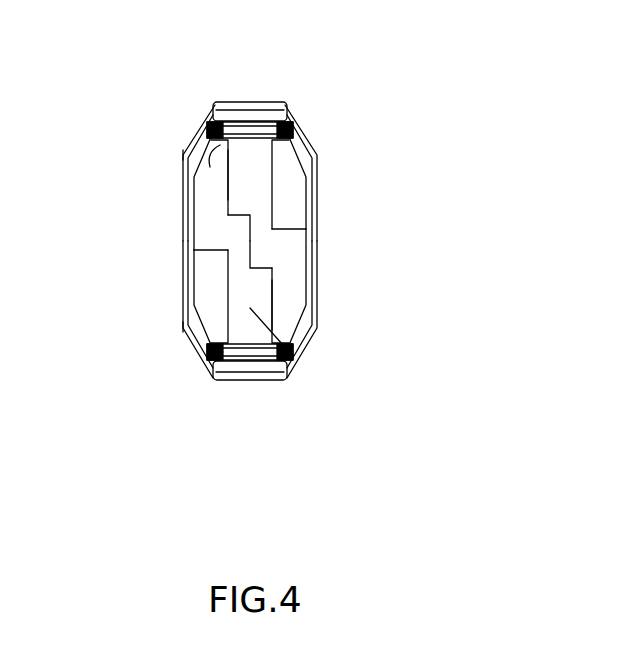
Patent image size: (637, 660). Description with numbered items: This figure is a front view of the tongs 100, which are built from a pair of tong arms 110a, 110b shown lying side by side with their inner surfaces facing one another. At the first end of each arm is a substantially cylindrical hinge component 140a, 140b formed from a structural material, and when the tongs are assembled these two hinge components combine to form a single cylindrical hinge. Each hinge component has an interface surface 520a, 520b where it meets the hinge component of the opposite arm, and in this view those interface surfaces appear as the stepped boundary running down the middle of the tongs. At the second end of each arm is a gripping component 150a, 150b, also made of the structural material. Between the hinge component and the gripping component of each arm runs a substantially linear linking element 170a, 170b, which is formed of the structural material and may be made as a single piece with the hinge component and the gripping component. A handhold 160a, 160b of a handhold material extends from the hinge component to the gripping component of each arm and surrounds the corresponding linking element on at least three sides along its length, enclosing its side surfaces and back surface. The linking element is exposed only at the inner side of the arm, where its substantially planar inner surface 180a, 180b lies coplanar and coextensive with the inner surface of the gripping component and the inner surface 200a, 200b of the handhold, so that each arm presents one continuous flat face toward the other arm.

The tongs 100 is at (353, 182).
The tong arm 110a is at (322, 143).
The tong arm 110b is at (330, 345).
The hinge component 140a is at (297, 238).
The hinge component 140b is at (203, 270).
The gripping component 150a is at (282, 103).
The gripping component 150b is at (214, 380).
The handhold 160a is at (184, 152).
The handhold 160b is at (183, 332).
The linking element 170a is at (250, 195).
The linking element 170b is at (288, 380).
The inner surface of linking element 180a is at (248, 177).
The inner surface of linking element 180b is at (245, 297).
The inner surface of handhold 200a is at (185, 150).
The inner surface of handhold 200b is at (290, 289).
The interface surface 520a is at (250, 255).
The interface surface 520b is at (250, 242).